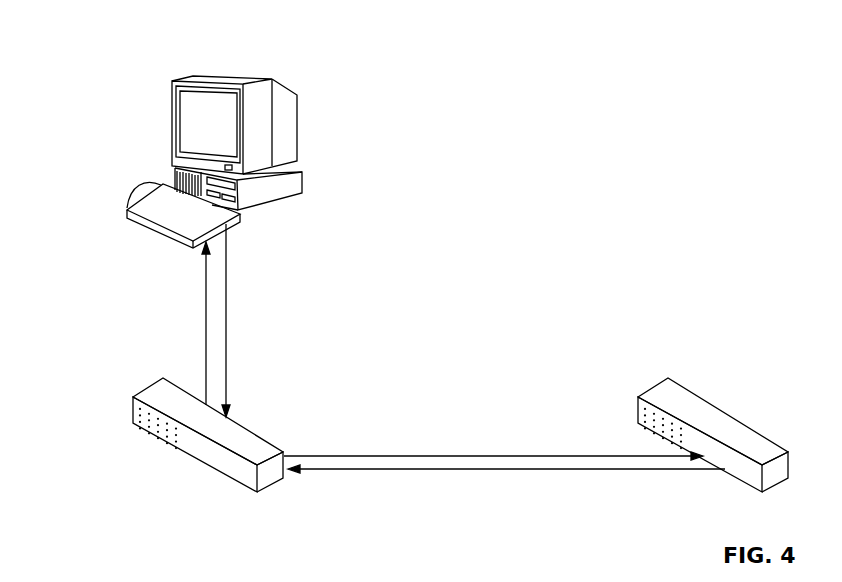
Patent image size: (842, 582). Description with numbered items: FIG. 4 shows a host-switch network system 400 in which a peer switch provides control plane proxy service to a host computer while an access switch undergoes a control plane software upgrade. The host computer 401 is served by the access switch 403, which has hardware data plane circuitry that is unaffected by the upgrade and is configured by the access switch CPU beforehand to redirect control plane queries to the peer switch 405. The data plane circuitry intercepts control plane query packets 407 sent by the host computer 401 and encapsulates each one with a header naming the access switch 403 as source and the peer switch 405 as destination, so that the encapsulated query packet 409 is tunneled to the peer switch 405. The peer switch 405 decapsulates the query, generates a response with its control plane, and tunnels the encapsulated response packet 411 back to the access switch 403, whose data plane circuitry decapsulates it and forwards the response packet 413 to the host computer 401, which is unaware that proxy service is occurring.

The system 400 is at (98, 30).
The host computer 401 is at (298, 127).
The access switch 403 is at (152, 387).
The peer switch 405 is at (653, 387).
The control plane query packets 407 is at (227, 323).
The encapsulated query packet 409 is at (483, 456).
The encapsulated response packet 411 is at (492, 470).
The response packet 413 is at (205, 323).